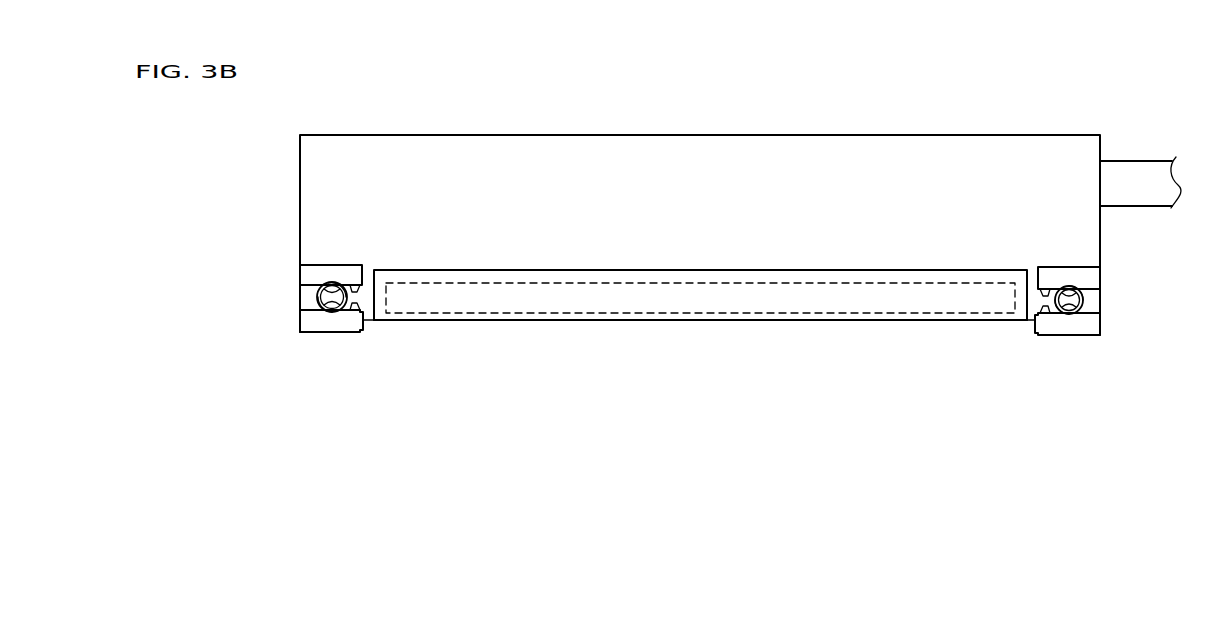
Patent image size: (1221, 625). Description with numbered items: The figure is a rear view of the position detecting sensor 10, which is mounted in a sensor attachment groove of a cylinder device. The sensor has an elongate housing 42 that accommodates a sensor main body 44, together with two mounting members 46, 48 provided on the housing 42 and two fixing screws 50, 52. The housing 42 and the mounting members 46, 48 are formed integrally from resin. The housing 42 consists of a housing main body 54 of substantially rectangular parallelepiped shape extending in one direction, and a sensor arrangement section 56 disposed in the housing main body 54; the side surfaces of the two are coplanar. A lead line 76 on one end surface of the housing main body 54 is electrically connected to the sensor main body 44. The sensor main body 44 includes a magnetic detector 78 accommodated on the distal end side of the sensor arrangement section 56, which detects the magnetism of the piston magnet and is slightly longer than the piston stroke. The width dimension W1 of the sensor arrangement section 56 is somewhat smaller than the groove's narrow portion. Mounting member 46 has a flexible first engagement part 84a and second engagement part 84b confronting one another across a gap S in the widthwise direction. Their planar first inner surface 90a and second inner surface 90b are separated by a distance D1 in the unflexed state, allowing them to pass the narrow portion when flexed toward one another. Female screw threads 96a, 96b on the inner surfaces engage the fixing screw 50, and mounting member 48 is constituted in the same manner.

The position detecting sensor 10 is at (420, 99).
The housing 42 is at (604, 130).
The sensor main body 44 is at (651, 280).
The mounting member 46 is at (288, 322).
The mounting member 48 is at (1092, 323).
The fixing screw 50 is at (318, 297).
The fixing screw 52 is at (1083, 301).
The housing main body 54 is at (664, 150).
The sensor arrangement section 56 is at (537, 322).
The lead line 76 is at (1134, 175).
The magnetic detector 78 is at (608, 318).
The first engagement part 84a is at (312, 321).
The second engagement part 84b is at (312, 275).
The first inner surface 90a is at (349, 312).
The second inner surface 90b is at (354, 284).
The female screw threads 96a is at (329, 313).
The female screw threads 96b is at (329, 282).
The gap S is at (346, 298).
The width dimension W1 is at (811, 345).
The distance D1 is at (1082, 289).